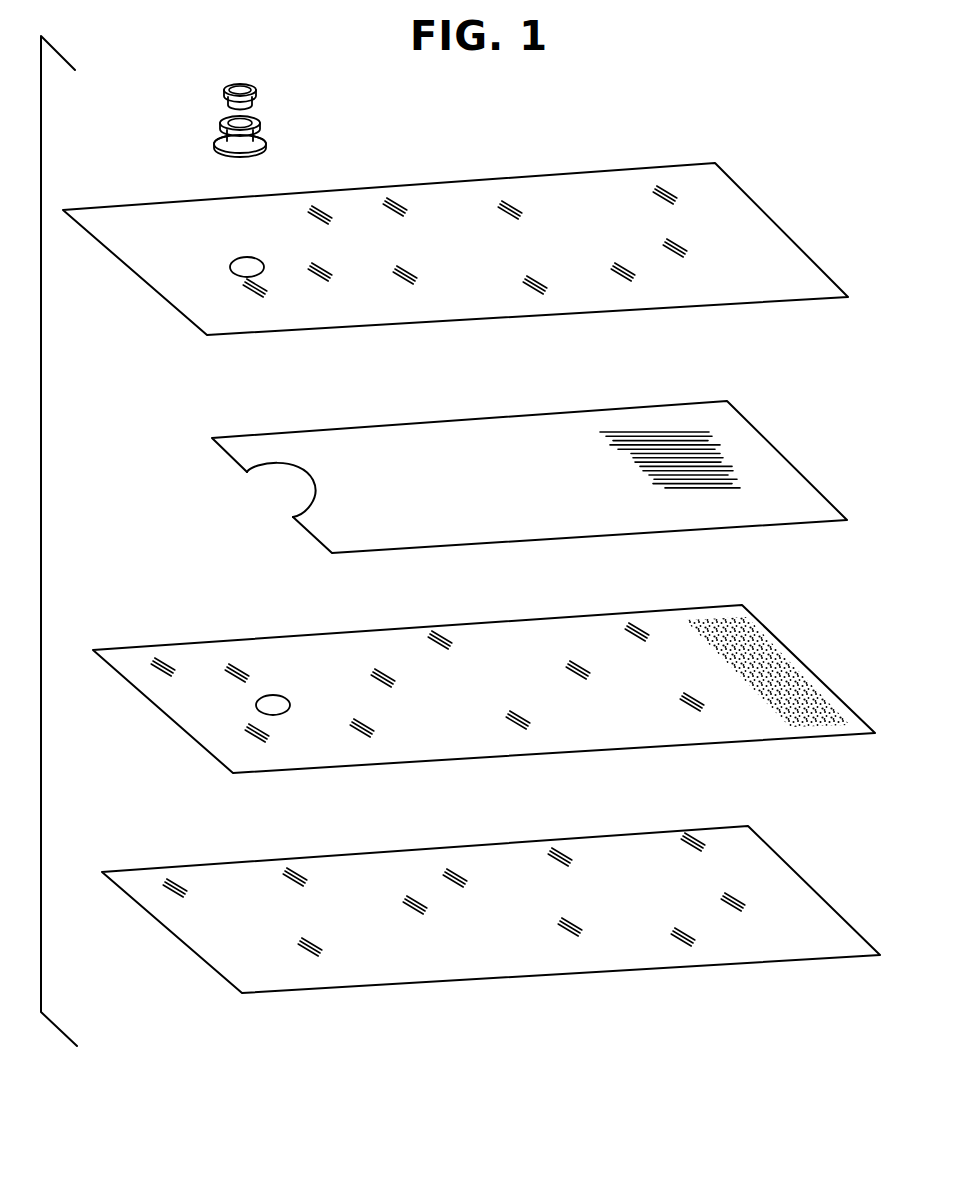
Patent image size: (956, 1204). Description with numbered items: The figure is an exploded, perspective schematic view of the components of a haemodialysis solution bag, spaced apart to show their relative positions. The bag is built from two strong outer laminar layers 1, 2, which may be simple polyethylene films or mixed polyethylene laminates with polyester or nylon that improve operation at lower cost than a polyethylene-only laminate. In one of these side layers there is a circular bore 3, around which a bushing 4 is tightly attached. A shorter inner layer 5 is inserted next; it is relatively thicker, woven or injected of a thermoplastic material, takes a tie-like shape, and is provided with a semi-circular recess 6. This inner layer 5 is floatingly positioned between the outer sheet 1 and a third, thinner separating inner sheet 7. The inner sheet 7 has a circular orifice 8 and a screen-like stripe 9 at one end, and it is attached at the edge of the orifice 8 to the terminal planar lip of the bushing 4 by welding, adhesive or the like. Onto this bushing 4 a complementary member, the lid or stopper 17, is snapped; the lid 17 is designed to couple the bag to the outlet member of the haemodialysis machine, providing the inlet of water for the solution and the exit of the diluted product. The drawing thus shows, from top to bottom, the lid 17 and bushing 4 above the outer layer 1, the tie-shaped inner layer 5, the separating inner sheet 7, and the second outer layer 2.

The outer laminar layer 1 is at (750, 232).
The outer laminar layer 2 is at (778, 895).
The circular bore 3 is at (238, 262).
The bushing 4 is at (218, 131).
The inner layer 5 is at (245, 455).
The semi-circular recess 6 is at (294, 487).
The inner sheet 7 is at (197, 660).
The circular orifice 8 is at (262, 700).
The screen-like stripe 9 is at (757, 655).
The lid or stopper 17 is at (227, 91).